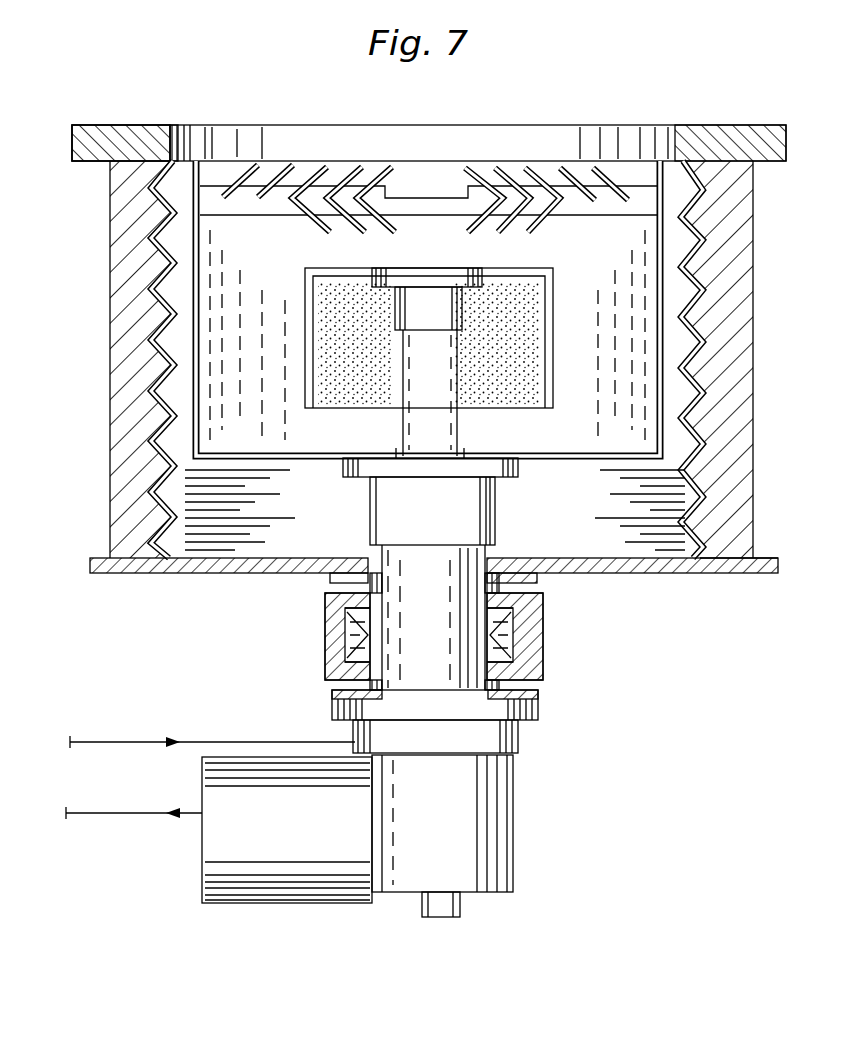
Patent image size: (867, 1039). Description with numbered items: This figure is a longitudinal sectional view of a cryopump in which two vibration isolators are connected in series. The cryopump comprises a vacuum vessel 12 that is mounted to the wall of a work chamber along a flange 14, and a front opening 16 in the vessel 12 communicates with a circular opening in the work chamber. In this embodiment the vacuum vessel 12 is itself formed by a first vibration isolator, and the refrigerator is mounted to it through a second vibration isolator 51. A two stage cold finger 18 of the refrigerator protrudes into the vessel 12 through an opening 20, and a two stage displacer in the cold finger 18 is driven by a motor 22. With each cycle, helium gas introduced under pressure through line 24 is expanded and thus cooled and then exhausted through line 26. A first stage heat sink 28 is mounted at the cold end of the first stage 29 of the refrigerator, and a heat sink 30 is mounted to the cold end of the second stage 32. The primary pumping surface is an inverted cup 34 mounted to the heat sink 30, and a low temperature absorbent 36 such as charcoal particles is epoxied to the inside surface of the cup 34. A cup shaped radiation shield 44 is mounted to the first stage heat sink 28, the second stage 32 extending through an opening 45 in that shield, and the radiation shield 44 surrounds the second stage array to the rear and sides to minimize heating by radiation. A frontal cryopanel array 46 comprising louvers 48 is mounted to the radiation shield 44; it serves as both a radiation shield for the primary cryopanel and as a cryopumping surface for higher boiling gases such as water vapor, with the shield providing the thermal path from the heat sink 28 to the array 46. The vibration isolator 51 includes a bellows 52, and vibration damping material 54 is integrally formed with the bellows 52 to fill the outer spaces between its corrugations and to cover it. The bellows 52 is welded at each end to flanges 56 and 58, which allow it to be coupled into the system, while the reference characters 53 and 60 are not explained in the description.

The vacuum vessel 12 is at (172, 560).
The flange 14 is at (90, 163).
The front opening 16 is at (546, 124).
The two stage cold finger 18 is at (503, 505).
The opening 20 is at (492, 556).
The motor 22 is at (291, 903).
The line 24 is at (155, 742).
The line 26 is at (143, 813).
The first stage heat sink 28 is at (362, 472).
The first stage 29 is at (472, 660).
The heat sink 30 is at (395, 275).
The second stage 32 is at (400, 382).
The inverted cup 34 is at (553, 352).
The low temperature absorbent 36 is at (540, 395).
The radiation shield 44 is at (205, 345).
The opening 45 is at (400, 452).
The frontal cryopanel array 46 is at (337, 146).
The louvers 48 is at (383, 165).
The vibration isolator 51 is at (553, 633).
The bellows 52 is at (352, 647).
The base plate edge 53 is at (703, 575).
The vibration damping material 54 is at (115, 352).
The flange 56 is at (332, 578).
The flange 58 is at (334, 695).
The vanes 60 is at (637, 200).